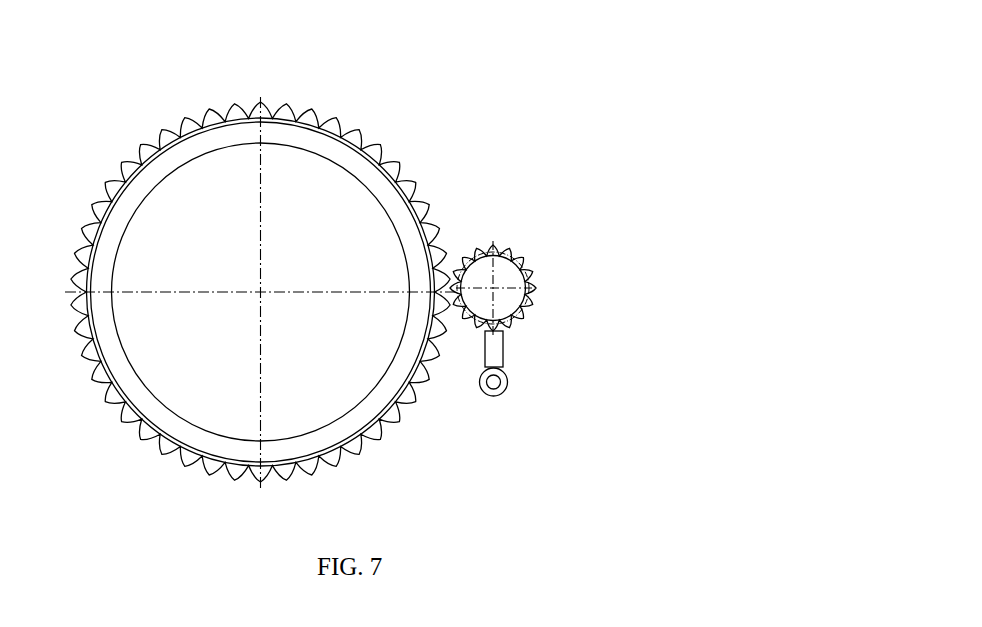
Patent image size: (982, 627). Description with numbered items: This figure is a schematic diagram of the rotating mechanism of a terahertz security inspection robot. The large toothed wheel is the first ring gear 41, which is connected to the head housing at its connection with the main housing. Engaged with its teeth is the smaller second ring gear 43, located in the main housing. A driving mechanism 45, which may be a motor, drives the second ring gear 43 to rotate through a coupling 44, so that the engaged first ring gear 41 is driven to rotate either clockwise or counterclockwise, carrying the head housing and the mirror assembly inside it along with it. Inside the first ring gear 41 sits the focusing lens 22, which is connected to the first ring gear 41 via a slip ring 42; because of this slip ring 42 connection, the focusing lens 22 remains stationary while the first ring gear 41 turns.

The first ring gear 41 is at (343, 133).
The slip ring 42 is at (395, 212).
The second ring gear 43 is at (523, 253).
The coupling 44 is at (493, 348).
The driving mechanism 45 is at (495, 383).
The focusing lens 22 is at (295, 355).